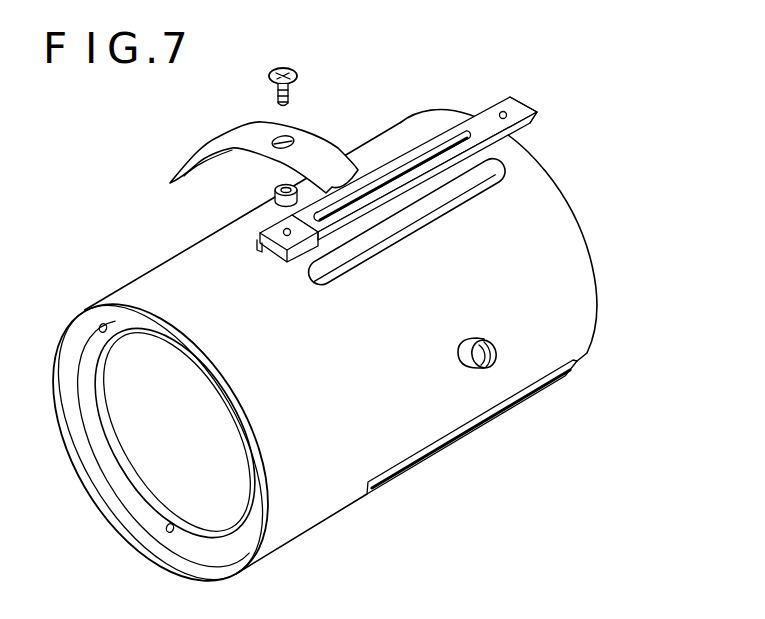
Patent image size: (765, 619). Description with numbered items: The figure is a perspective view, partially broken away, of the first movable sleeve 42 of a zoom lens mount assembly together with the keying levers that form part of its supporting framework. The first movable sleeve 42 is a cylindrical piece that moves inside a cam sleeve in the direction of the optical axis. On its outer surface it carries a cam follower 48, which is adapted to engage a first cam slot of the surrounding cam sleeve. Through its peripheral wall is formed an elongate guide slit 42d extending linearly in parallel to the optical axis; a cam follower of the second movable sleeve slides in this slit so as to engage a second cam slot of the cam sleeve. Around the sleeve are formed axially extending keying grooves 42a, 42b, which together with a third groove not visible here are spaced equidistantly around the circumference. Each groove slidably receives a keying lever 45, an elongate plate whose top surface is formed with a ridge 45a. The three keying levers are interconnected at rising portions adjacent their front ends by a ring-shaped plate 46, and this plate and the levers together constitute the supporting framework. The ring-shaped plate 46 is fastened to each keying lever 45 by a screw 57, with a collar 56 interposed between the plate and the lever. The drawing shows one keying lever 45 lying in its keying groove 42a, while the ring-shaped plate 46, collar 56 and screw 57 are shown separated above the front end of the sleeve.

The first movable sleeve 42 is at (178, 278).
The keying groove 42a is at (393, 166).
The keying groove 42b is at (483, 430).
The elongate guide slit 42d is at (468, 200).
The keying lever 45 is at (492, 117).
The ridge 45a is at (438, 148).
The ring-shaped plate 46 is at (238, 131).
The cam follower 48 is at (478, 335).
The collar 56 is at (272, 200).
The screw 57 is at (292, 67).